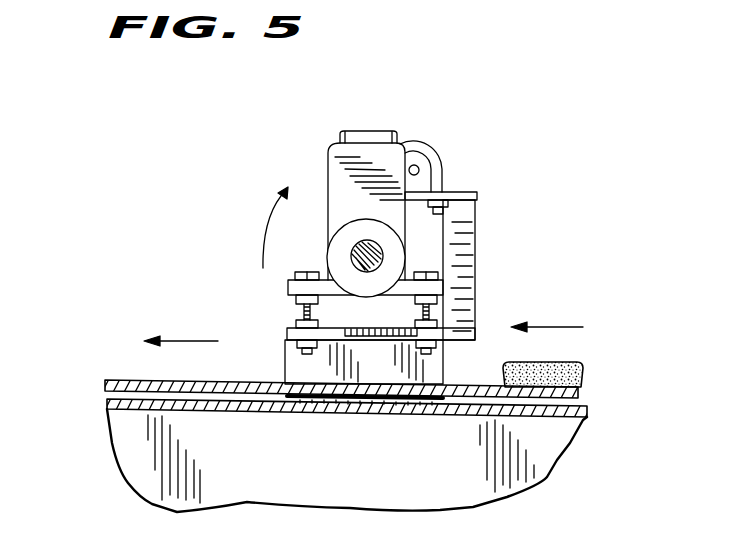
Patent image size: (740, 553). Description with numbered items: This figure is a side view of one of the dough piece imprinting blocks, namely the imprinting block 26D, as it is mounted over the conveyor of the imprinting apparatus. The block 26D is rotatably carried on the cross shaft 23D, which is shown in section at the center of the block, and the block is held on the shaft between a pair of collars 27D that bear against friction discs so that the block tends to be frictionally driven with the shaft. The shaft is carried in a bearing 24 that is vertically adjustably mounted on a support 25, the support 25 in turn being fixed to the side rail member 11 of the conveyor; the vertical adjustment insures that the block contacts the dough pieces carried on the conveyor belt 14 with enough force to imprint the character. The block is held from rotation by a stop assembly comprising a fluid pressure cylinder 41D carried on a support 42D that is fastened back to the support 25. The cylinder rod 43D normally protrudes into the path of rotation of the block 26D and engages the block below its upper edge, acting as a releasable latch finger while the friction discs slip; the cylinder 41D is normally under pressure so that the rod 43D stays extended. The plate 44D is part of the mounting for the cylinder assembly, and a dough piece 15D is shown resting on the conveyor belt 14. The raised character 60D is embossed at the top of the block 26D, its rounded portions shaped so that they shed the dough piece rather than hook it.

The side rail member 11 is at (155, 467).
The conveyor belt 14 is at (147, 382).
The workpiece pad 15D is at (560, 363).
The cross shaft 23D is at (357, 251).
The bearing 24 is at (444, 289).
The support 25 is at (300, 364).
The imprinting block 26D is at (343, 159).
The collar 27D is at (393, 256).
The fluid pressure cylinder 41D is at (441, 152).
The support 42D is at (447, 233).
The cylinder rod 43D is at (420, 170).
The arm plate 44D is at (444, 181).
The character 60D is at (374, 129).